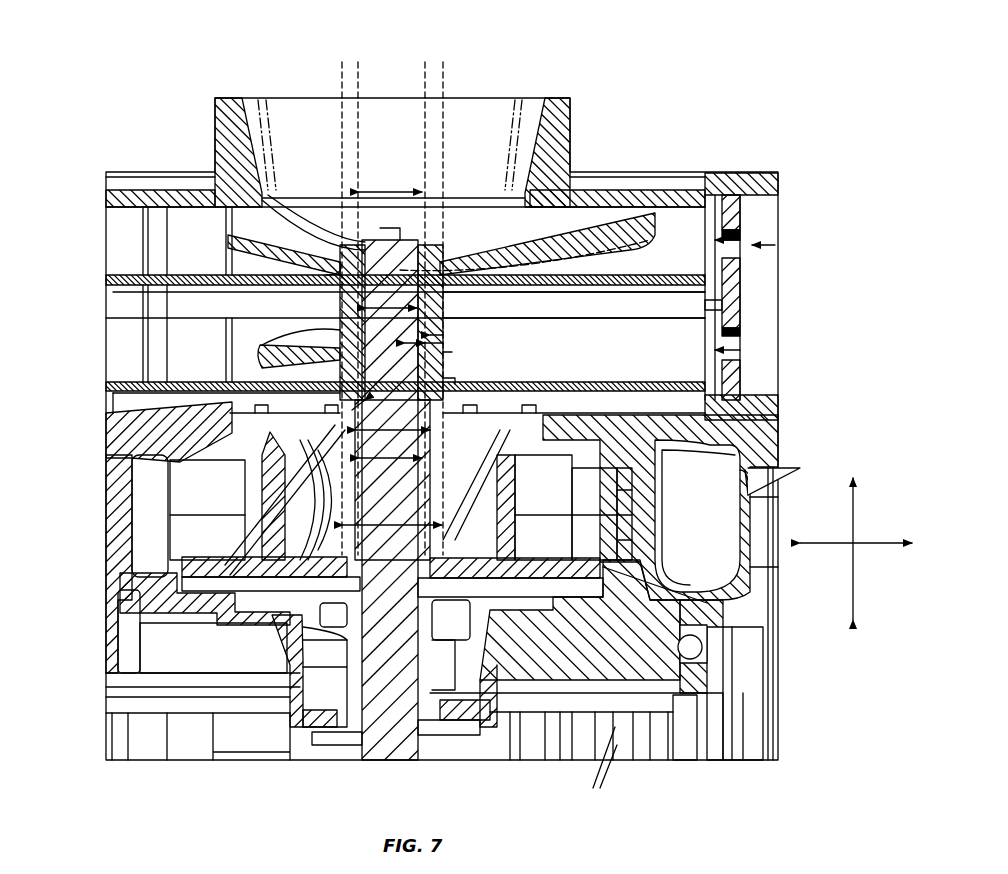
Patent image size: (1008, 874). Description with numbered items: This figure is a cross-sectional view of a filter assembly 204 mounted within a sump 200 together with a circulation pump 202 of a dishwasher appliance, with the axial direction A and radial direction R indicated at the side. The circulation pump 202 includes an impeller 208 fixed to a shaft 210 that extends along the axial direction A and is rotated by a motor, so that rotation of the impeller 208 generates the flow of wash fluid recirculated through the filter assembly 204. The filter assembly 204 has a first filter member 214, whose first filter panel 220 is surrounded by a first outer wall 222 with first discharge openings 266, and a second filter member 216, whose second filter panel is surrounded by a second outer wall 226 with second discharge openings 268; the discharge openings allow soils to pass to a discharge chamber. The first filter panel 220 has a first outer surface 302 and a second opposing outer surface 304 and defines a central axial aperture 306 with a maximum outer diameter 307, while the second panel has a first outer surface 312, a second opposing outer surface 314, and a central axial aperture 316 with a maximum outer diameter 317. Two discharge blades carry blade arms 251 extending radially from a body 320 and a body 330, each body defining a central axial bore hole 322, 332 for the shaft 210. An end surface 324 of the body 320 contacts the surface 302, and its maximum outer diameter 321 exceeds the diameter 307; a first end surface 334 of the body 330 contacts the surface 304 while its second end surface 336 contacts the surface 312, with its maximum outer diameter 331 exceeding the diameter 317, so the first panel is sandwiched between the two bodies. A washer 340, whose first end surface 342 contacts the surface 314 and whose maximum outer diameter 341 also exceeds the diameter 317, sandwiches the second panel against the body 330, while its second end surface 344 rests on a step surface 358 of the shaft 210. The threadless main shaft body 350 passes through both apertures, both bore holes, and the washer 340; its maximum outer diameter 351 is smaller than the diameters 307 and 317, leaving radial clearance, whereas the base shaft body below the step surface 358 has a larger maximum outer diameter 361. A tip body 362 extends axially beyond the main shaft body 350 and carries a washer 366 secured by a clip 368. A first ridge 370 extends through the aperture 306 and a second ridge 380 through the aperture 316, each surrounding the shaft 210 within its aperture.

The sump 200 is at (137, 85).
The circulation pump 202 is at (210, 638).
The filter assembly 204 is at (778, 242).
The impeller 208 is at (545, 545).
The shaft 210 is at (387, 738).
The first filter member 214 is at (738, 216).
The second filter member 216 is at (740, 330).
The first filter panel 220 is at (710, 245).
The first outer wall 222 is at (715, 218).
The second outer wall 226 is at (718, 322).
The blade arms 251 is at (475, 262).
The first discharge openings 266 is at (745, 240).
The second discharge openings 268 is at (745, 350).
The first outer surface 302 is at (130, 272).
The second opposing outer surface 304 is at (125, 292).
The central axial aperture 306 is at (136, 317).
The maximum outer diameter 307 is at (390, 191).
The first outer surface 312 is at (132, 380).
The second opposing outer surface 314 is at (125, 393).
The central axial aperture 316 is at (118, 463).
The maximum outer diameter 317 is at (393, 465).
The body 320 is at (432, 258).
The maximum outer diameter 321 is at (442, 132).
The central axial bore hole 322 is at (445, 288).
The end surface 324 is at (245, 268).
The body 330 is at (437, 340).
The maximum outer diameter 331 is at (392, 521).
The central axial bore hole 332 is at (446, 345).
The first end surface 334 is at (520, 280).
The second end surface 336 is at (504, 437).
The washer 340 is at (504, 437).
The maximum outer diameter 341 is at (352, 500).
The first end surface 342 is at (312, 347).
The second end surface 344 is at (300, 440).
The main shaft body 350 is at (440, 352).
The maximum outer diameter 351 is at (397, 342).
The step surface 358 is at (442, 382).
The maximum outer diameter 361 is at (380, 403).
The tip body 362 is at (355, 236).
The washer 366 is at (242, 200).
The clip 368 is at (248, 118).
The first ridge 370 is at (504, 437).
The second ridge 380 is at (353, 372).
The axial direction A is at (855, 520).
The radial direction R is at (874, 547).